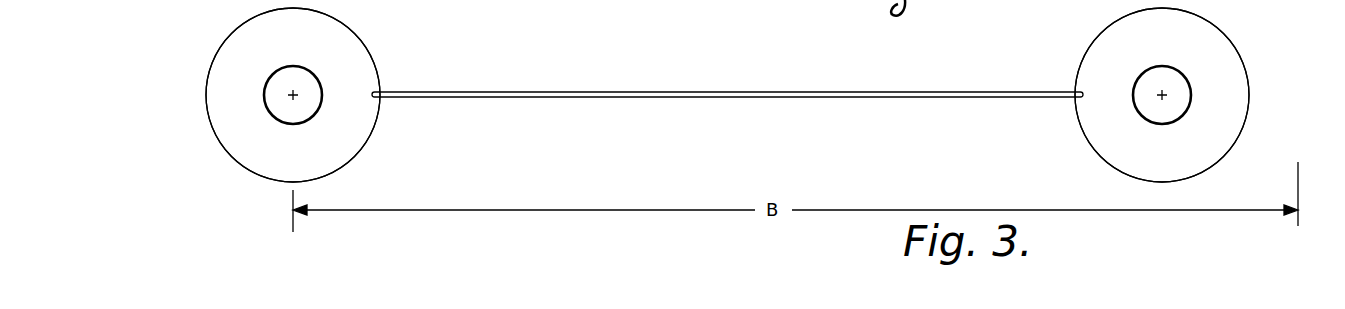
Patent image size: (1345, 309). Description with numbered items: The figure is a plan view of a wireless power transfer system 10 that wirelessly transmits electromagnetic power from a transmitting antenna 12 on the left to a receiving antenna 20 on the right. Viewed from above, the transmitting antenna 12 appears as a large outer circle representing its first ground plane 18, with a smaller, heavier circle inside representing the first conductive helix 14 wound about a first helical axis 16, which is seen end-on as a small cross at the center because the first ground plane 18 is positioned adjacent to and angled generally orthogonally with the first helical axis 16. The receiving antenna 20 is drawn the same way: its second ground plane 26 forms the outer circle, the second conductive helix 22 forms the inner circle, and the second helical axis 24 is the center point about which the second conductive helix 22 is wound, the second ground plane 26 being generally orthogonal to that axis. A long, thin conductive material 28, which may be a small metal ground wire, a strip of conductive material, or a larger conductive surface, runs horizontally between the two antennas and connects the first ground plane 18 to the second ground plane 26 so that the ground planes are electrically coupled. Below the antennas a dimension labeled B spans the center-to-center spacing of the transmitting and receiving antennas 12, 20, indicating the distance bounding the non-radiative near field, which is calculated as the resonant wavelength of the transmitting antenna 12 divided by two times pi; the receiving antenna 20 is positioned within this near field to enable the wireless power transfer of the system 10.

The wireless power transfer system 10 is at (486, 34).
The transmitting antenna 12 is at (212, 29).
The first conductive helix 14 is at (318, 108).
The first helical axis 16 is at (296, 90).
The first ground plane 18 is at (256, 155).
The receiving antenna 20 is at (1238, 29).
The second conductive helix 22 is at (1140, 76).
The second helical axis 24 is at (1165, 92).
The second ground plane 26 is at (1233, 118).
The conductive material 28 is at (752, 92).